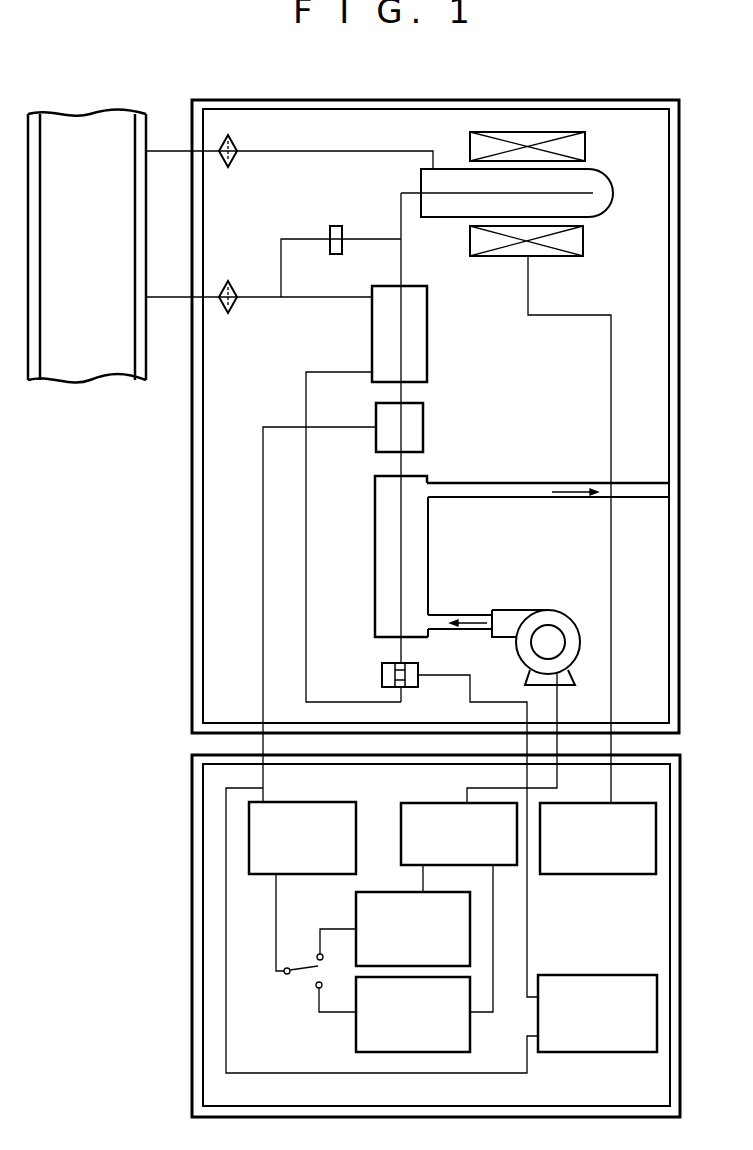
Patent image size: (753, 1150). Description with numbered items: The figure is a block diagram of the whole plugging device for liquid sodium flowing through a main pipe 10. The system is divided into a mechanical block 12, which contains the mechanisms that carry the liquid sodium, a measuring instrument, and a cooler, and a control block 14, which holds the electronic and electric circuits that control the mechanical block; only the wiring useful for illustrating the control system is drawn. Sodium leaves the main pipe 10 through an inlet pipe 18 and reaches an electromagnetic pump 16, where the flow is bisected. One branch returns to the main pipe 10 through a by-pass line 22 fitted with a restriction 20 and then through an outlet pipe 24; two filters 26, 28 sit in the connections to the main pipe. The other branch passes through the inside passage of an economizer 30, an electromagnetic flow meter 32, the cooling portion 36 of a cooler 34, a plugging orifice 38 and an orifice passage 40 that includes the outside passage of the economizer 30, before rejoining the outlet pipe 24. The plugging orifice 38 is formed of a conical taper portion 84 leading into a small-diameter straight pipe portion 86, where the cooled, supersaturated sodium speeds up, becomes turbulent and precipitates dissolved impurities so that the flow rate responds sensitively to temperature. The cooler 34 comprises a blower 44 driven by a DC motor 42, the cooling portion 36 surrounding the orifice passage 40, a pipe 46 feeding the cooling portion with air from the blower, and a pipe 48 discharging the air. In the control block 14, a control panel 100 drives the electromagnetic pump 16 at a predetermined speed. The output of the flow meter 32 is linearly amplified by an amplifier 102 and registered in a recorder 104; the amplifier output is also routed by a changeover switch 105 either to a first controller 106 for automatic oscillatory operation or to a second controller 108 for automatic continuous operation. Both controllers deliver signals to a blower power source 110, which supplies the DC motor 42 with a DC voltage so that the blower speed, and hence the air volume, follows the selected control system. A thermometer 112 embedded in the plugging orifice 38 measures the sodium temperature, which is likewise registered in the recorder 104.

The main pipe 10 is at (102, 118).
The mechanical block 12 is at (270, 100).
The control block 14 is at (192, 798).
The electromagnetic pump 16 is at (603, 160).
The inlet pipe 18 is at (354, 151).
The restriction 20 is at (337, 226).
The by-pass line 22 is at (293, 239).
The outlet pipe 24 is at (260, 299).
The filter 26 is at (234, 141).
The filter 28 is at (224, 283).
The economizer 30 is at (427, 311).
The electromagnetic flow meter 32 is at (422, 424).
The cooler 34 is at (448, 472).
The cooling portion 36 is at (374, 505).
The plugging orifice 38 is at (382, 668).
The orifice passage 40 is at (307, 467).
The DC motor 42 is at (553, 633).
The blower 44 is at (509, 615).
The pipe 46 is at (446, 615).
The pipe 48 is at (522, 493).
The taper portion 84 is at (406, 665).
The straight pipe portion 86 is at (404, 687).
The control panel 100 is at (642, 795).
The amplifier 102 is at (316, 795).
The recorder 104 is at (598, 975).
The changeover switch 105 is at (303, 960).
The first controller 106 is at (397, 892).
The second controller 108 is at (356, 1027).
The blower power source 110 is at (433, 803).
The thermometer 112 is at (420, 673).